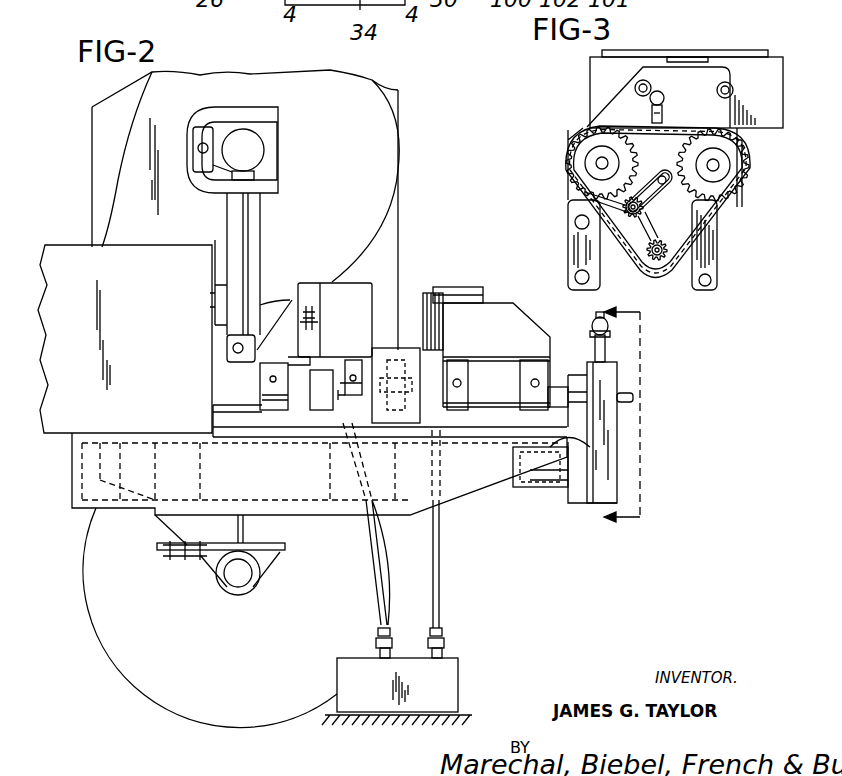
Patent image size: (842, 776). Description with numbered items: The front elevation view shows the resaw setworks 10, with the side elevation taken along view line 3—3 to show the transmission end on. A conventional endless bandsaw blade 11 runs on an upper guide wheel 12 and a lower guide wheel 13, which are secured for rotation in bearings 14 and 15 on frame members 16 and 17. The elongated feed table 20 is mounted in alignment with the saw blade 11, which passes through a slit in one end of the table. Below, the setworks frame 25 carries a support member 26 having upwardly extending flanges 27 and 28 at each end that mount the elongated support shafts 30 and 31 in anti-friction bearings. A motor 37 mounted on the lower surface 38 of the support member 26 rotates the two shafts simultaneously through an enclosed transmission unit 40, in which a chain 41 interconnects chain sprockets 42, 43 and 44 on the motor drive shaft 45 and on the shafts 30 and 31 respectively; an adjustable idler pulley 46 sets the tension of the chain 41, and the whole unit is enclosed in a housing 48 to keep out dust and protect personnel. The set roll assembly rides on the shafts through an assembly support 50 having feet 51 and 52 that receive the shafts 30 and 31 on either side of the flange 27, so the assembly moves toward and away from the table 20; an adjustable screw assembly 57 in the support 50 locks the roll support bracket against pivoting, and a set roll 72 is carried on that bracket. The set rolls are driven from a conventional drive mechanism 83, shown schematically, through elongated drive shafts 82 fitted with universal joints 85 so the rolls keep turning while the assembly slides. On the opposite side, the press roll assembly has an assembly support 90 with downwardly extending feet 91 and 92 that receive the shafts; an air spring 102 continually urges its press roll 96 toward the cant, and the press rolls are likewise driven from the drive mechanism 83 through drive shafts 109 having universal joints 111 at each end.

In FIG. 2, the resaw setworks 10 is at (68, 213).
In FIG. 2, the endless bandsaw blade 11 is at (398, 232).
In FIG. 2, the upper guide wheel 12 is at (390, 128).
In FIG. 2, the lower guide wheel 13 is at (134, 676).
In FIG. 2, the bearing 14 is at (258, 145).
In FIG. 2, the bearing 15 is at (248, 584).
In FIG. 2, the frame member 16 is at (272, 163).
In FIG. 2, the frame member 17 is at (210, 557).
In FIG. 2, the feed table 20 is at (412, 348).
In FIG. 2, the setworks frame 25 is at (465, 487).
In FIG. 2, the support member 26 is at (492, 435).
In FIG. 2, the flange 27 is at (318, 405).
In FIG. 2, the flange 28 is at (585, 410).
In FIG. 3, the flange 28 is at (767, 75).
In FIG. 3, the support shaft 30 is at (600, 163).
In FIG. 3, the support shaft 31 is at (718, 167).
In FIG. 2, the motor 37 is at (545, 486).
In FIG. 2, the lower surface 38 is at (575, 436).
In FIG. 2, the transmission unit 40 is at (616, 389).
In FIG. 3, the transmission unit 40 is at (723, 225).
In FIG. 3, the chain 41 is at (633, 128).
In FIG. 3, the chain sprocket 42 is at (657, 243).
In FIG. 3, the chain sprocket 43 is at (580, 155).
In FIG. 3, the chain sprocket 44 is at (732, 155).
In FIG. 3, the motor drive shaft 45 is at (658, 260).
In FIG. 3, the adjustable idler pulley 46 is at (633, 218).
In FIG. 2, the housing 48 is at (613, 472).
In FIG. 2, the assembly support 50 is at (263, 368).
In FIG. 2, the foot 51 is at (270, 410).
In FIG. 2, the foot 52 is at (352, 407).
In FIG. 2, the adjustable screw assembly 57 is at (312, 307).
In FIG. 2, the set roll 72 is at (375, 300).
In FIG. 2, the drive shaft 82 is at (377, 582).
In FIG. 2, the drive mechanism 83 is at (450, 684).
In FIG. 2, the universal joint 85 is at (375, 641).
In FIG. 2, the assembly support 90 is at (510, 314).
In FIG. 2, the foot 91 is at (458, 365).
In FIG. 2, the foot 92 is at (535, 398).
In FIG. 2, the press roll 96 is at (480, 276).
In FIG. 2, the air spring 102 is at (433, 305).
In FIG. 2, the drive shaft 109 is at (435, 588).
In FIG. 2, the universal joint 111 is at (445, 642).
In FIG. 2, the view line 3— 3 is at (632, 417).